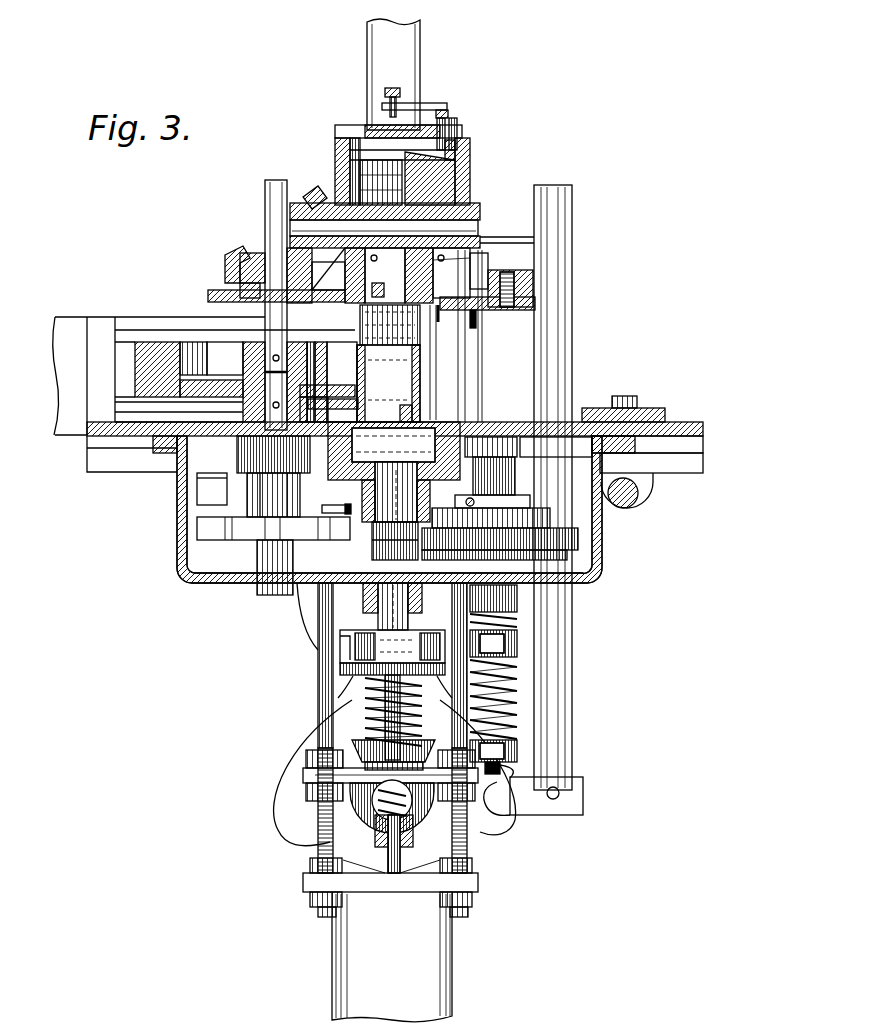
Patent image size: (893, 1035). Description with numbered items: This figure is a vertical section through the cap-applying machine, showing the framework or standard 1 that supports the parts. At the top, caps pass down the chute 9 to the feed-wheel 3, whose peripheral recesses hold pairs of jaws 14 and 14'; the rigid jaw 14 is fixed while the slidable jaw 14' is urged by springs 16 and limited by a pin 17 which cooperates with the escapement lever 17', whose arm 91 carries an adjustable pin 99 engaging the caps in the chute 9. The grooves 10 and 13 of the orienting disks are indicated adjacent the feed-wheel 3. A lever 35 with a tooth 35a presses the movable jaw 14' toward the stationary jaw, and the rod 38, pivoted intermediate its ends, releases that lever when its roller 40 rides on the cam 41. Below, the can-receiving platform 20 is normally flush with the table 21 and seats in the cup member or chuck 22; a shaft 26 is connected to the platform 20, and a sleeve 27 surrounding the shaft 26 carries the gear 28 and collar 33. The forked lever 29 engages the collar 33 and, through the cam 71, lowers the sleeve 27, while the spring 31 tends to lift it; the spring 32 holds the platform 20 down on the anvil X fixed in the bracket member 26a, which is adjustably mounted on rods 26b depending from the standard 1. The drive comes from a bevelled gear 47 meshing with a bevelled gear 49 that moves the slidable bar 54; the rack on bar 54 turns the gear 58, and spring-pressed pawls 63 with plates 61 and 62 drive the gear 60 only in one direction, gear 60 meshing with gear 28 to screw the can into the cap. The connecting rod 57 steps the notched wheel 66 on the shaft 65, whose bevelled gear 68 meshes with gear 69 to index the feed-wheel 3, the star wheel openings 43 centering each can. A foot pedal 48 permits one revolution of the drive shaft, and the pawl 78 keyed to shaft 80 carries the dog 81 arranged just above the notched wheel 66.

The framework or standard 1 is at (437, 955).
The feed-wheel 3 is at (445, 204).
The chute 9 is at (409, 39).
The annular groove 10 is at (470, 229).
The shallow channel or groove 13 is at (396, 182).
The rigid jaw 14 is at (381, 161).
The slidable jaw 14' is at (470, 135).
The springs 16 is at (455, 168).
The pin 17 is at (420, 260).
The escapement lever 17' is at (459, 115).
The can-receiving platform 20 is at (420, 405).
The table 21 is at (481, 422).
The cup member or chuck 22 is at (412, 422).
The shaft 26 is at (358, 688).
The bracket member 26a is at (378, 893).
The rods 26b is at (318, 862).
The sleeve 27 is at (395, 602).
The gear 28 is at (372, 540).
The lever 29 is at (340, 650).
The spring 31 is at (370, 705).
The spring 32 is at (355, 800).
The collar 33 is at (340, 668).
The lever 35 is at (500, 308).
The tooth 35a is at (474, 328).
The rod 38 is at (566, 224).
The roller 40 is at (505, 815).
The cam 41 is at (470, 842).
The can-receiving openings 43 is at (358, 366).
The bevelled gear 47 is at (318, 822).
The foot pedal 48 is at (190, 341).
The bevelled gear 49 is at (350, 745).
The slidable bar 54 is at (568, 440).
The connecting rod 57 is at (205, 490).
The gear 58 is at (515, 455).
The gear 60 is at (565, 538).
The spring-pressed plate 61 is at (560, 550).
The spring-pressed plate 62 is at (528, 514).
The spring-pressed pawls 63 is at (525, 500).
The shaft 65 is at (274, 181).
The notched wheel 66 is at (215, 528).
The bevelled gear 68 is at (232, 252).
The bevelled gear 69 is at (313, 195).
The cam 71 is at (290, 745).
The pawl 78 is at (360, 404).
The shaft 80 is at (340, 478).
The dog 81 is at (330, 506).
The arm 91 is at (424, 103).
The adjustable pin 99 is at (393, 88).
The anvil X is at (475, 872).